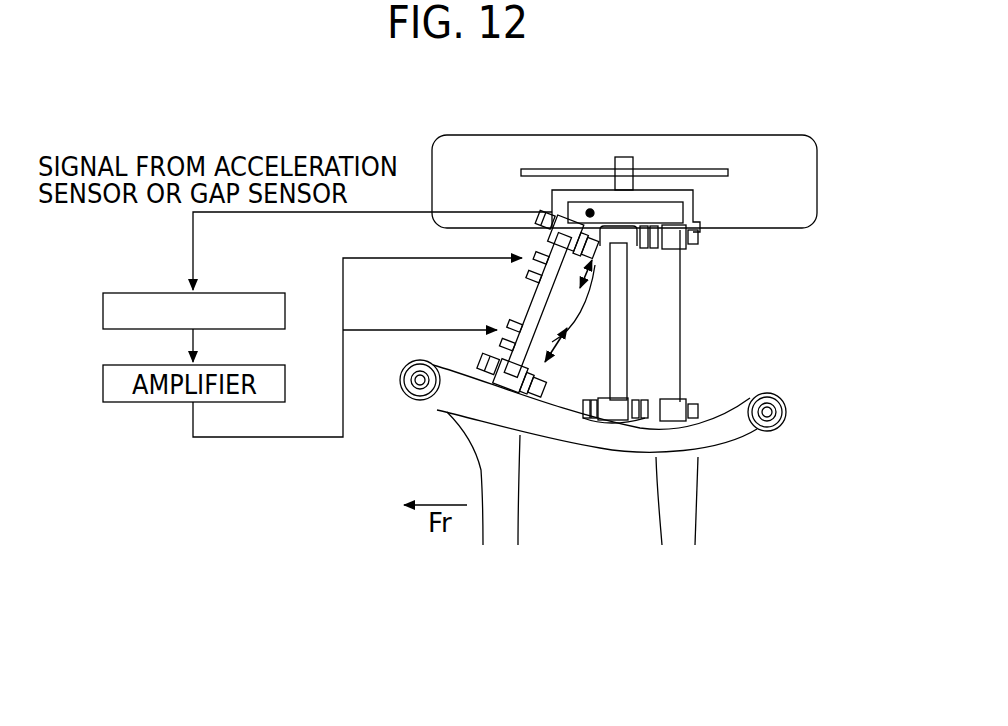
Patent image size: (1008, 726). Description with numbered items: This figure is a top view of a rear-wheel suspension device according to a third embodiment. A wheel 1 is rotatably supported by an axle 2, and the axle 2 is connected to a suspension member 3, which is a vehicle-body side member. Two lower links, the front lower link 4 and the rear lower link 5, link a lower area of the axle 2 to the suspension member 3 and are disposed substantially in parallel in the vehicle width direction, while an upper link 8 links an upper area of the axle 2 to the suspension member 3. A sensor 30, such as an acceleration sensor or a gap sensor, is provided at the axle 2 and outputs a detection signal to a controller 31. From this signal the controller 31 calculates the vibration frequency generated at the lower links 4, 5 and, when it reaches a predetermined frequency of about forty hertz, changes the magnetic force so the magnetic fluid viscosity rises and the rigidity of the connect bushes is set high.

The wheel 1 is at (807, 183).
The axle 2 is at (680, 195).
The suspension member 3 is at (723, 432).
The front lower link 4 is at (548, 292).
The rear lower link 5 is at (668, 355).
The upper link 8 is at (617, 297).
The sensor 30 is at (590, 208).
The controller 31 is at (238, 292).